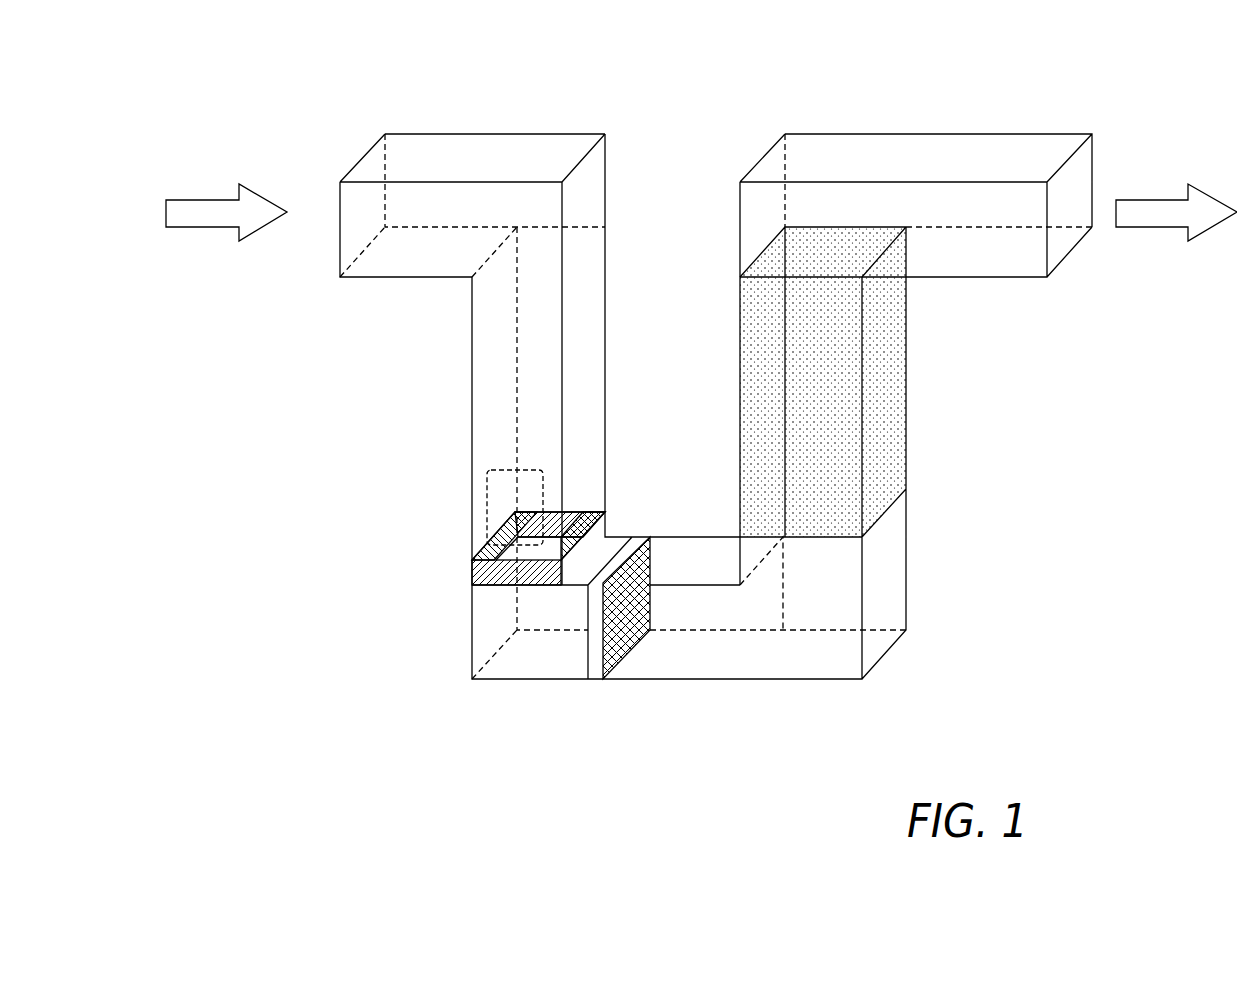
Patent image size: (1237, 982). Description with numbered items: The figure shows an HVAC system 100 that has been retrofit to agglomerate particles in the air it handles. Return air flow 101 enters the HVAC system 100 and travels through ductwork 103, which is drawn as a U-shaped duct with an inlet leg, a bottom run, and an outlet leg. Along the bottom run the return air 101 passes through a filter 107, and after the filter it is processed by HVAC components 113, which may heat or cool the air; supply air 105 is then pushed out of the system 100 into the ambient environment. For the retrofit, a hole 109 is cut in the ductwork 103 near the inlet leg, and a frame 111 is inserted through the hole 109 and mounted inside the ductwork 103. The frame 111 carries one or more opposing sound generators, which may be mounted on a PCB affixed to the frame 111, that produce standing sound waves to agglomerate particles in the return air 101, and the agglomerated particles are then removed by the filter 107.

The HVAC system 100 is at (730, 96).
The return air flow 101 is at (202, 200).
The ductwork 103 is at (485, 142).
The supply air 105 is at (1150, 200).
The filter 107 is at (600, 666).
The hole 109 is at (500, 498).
The frame 111 is at (485, 570).
The HVAC components 113 is at (897, 348).